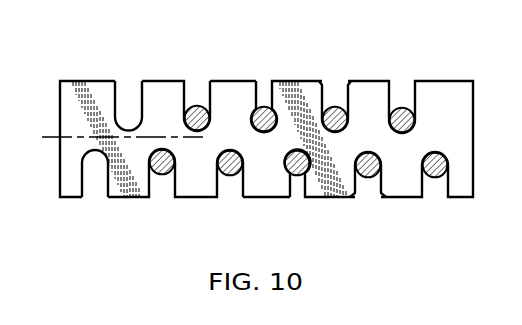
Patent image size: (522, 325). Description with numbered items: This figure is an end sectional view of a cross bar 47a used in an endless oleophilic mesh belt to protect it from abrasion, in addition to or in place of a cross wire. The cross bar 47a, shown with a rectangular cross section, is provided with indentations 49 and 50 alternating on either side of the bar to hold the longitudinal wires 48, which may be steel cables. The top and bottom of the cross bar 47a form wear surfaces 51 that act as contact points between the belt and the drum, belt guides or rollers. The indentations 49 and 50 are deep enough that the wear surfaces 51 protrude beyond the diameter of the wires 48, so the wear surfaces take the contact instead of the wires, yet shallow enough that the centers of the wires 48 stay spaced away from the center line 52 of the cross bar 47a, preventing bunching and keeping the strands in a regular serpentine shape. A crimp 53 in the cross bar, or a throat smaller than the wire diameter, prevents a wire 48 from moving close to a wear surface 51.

The cross bar 47a is at (60, 100).
The longitudinal wires 48 is at (196, 104).
The indentation 49 is at (100, 152).
The indentation 50 is at (123, 120).
The wear surfaces 51 is at (248, 81).
The center line 52 is at (109, 138).
The crimp 53 is at (339, 91).